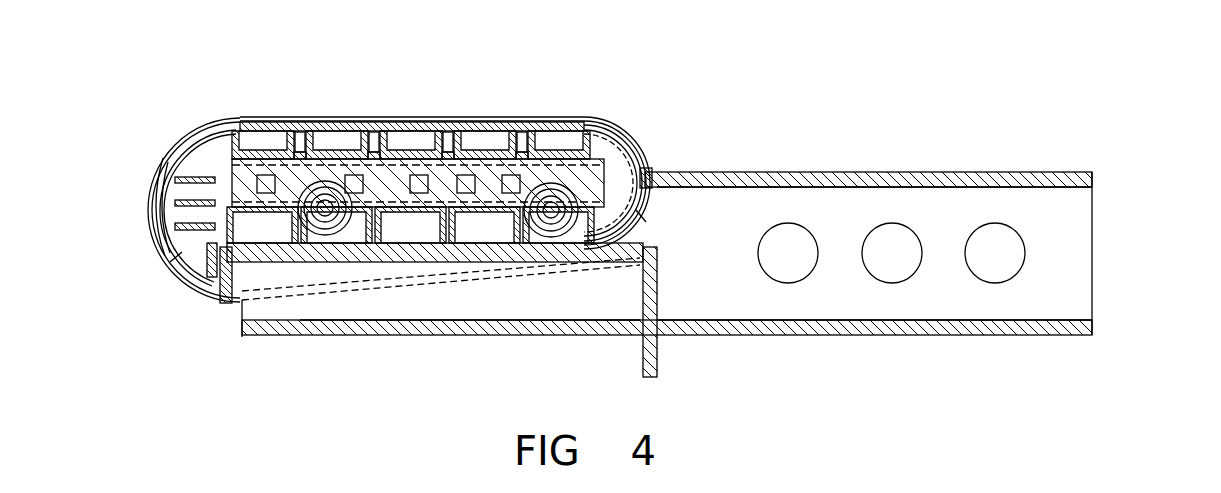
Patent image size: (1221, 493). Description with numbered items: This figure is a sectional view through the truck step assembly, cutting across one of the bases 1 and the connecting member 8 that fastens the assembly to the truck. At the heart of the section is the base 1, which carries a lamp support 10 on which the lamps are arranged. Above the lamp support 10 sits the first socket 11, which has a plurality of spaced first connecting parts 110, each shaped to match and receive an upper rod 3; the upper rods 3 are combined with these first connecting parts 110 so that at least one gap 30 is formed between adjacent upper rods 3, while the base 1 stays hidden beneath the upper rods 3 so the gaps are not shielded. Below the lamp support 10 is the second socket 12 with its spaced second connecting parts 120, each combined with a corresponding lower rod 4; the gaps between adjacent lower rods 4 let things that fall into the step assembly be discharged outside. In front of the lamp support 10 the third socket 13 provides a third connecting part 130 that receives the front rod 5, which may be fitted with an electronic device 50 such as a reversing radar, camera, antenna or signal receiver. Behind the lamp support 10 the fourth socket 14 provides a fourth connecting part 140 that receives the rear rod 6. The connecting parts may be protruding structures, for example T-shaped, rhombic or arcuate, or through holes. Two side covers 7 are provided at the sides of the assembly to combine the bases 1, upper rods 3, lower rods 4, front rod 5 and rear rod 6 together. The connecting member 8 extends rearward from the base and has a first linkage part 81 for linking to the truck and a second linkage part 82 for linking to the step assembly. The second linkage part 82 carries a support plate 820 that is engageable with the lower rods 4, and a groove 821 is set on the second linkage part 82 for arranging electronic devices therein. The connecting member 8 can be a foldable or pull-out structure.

The base 1 is at (218, 133).
The upper rod 3 is at (262, 125).
The lower rod 4 is at (242, 247).
The front rod 5 is at (178, 150).
The rear rod 6 is at (630, 137).
The side cover 7 is at (615, 125).
The connecting member 8 is at (912, 172).
The lamp support 10 is at (376, 130).
The first socket 11 is at (540, 135).
The second socket 12 is at (512, 268).
The third socket 13 is at (170, 257).
The fourth socket 14 is at (660, 170).
The gap 30 is at (375, 122).
The electronic device 50 is at (160, 178).
The first linkage part 81 is at (1063, 250).
The second linkage part 82 is at (265, 338).
The first connecting part 110 is at (272, 142).
The second connecting part 120 is at (325, 232).
The third connecting part 130 is at (178, 262).
The spaced protruding structure or through hole on the fourth socket with which the 140 is at (640, 215).
The support plate 820 is at (590, 265).
The groove 821 is at (375, 303).